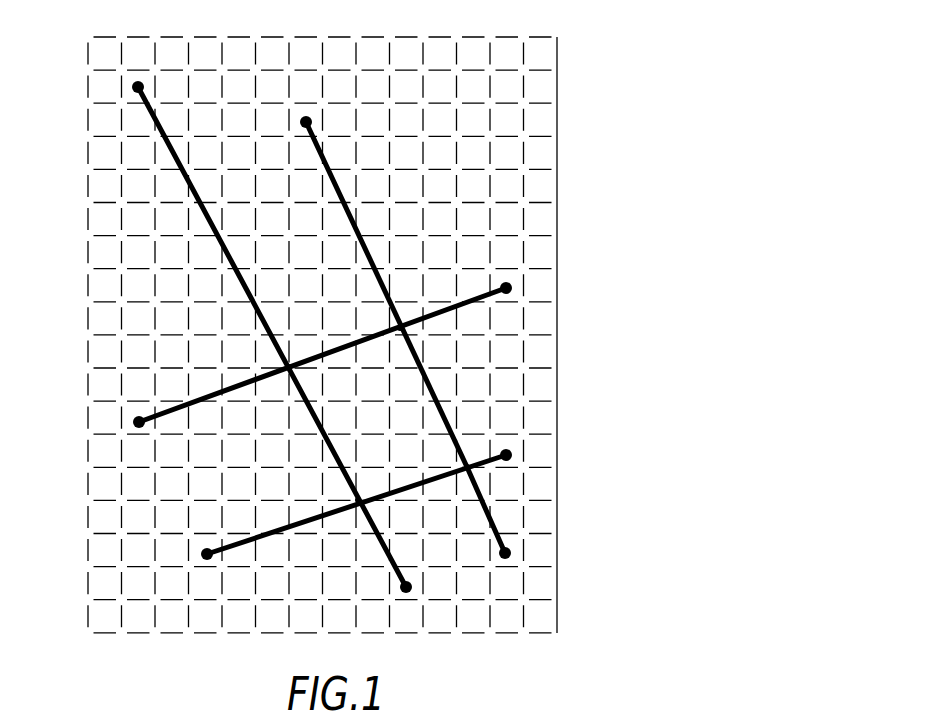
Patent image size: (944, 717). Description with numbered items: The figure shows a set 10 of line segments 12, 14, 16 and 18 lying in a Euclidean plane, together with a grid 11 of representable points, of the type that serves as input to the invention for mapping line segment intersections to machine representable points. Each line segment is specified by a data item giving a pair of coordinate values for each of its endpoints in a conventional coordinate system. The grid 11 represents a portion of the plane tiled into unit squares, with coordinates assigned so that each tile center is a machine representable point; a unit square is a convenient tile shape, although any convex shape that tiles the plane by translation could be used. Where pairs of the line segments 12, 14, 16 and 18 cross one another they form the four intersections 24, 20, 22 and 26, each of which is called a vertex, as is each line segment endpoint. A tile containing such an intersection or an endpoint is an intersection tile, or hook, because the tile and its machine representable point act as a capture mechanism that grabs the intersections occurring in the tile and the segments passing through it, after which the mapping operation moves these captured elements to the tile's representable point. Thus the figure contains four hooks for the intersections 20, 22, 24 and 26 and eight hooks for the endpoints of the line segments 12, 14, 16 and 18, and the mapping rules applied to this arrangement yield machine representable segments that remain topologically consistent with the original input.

The set of line segments 10 is at (338, 128).
The grid 11 is at (560, 67).
The line segment 12 is at (168, 155).
The line segment 14 is at (213, 391).
The line segment 16 is at (232, 541).
The line segment 18 is at (497, 527).
The intersection 20 is at (400, 328).
The intersection 22 is at (358, 500).
The intersection 24 is at (289, 367).
The intersection 26 is at (468, 467).